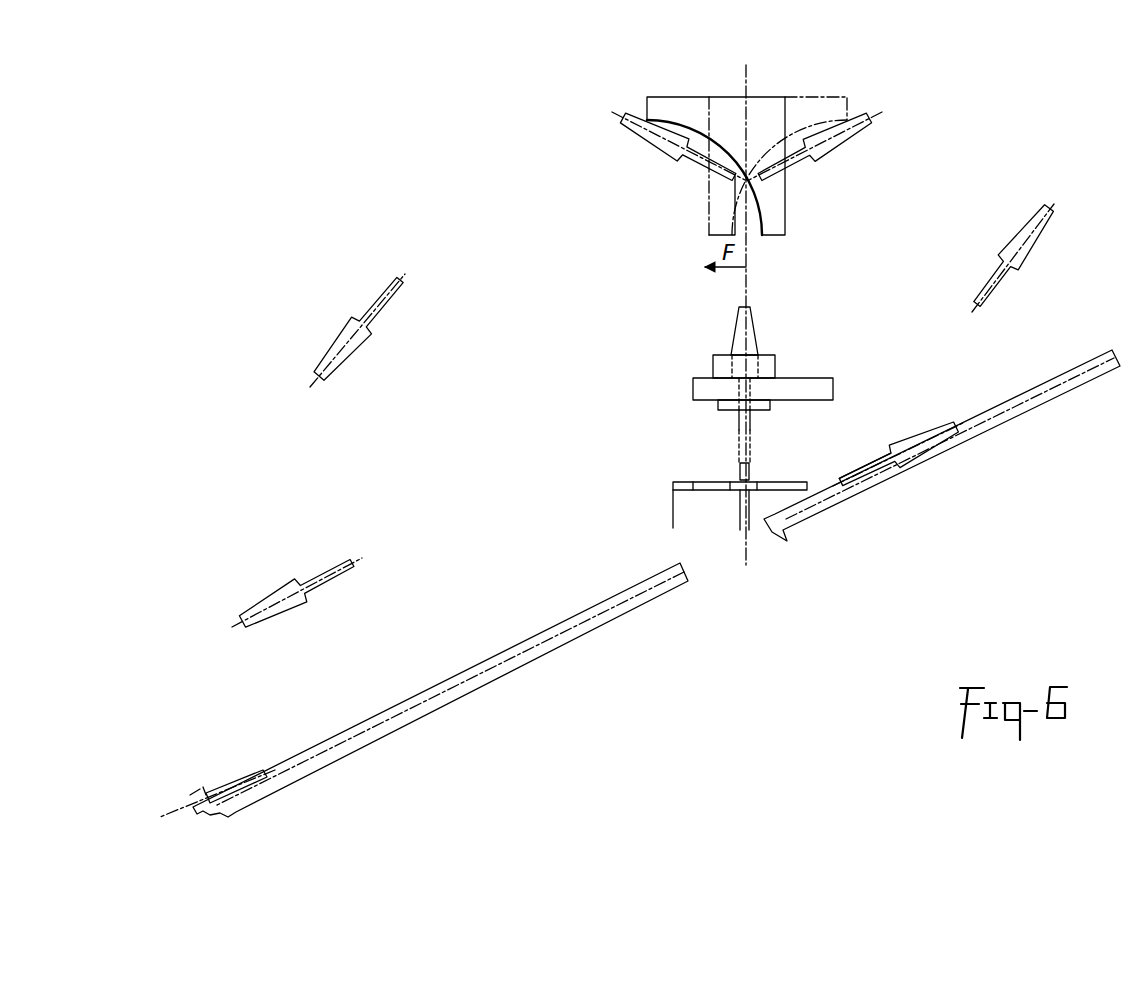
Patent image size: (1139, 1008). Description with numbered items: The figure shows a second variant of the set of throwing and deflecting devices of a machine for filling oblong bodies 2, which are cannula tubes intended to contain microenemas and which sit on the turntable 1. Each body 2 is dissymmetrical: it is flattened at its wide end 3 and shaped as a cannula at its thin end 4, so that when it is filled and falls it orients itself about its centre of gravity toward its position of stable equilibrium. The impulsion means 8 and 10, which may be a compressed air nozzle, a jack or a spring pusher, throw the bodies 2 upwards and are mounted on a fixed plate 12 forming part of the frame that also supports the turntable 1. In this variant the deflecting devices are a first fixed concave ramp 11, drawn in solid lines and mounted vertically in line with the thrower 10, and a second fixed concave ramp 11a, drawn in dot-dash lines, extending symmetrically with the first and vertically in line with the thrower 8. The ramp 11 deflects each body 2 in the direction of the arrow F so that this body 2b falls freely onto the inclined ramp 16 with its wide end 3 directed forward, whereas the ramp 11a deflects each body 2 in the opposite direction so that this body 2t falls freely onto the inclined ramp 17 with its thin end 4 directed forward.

The turntable 1 is at (812, 386).
The oblong body 2 is at (654, 151).
The body with wide end forward 2b is at (282, 537).
The body with thin end forward 2t is at (910, 428).
The wide end 3 is at (265, 595).
The thin end 4 is at (858, 470).
The impulsion means (thrower) 8 is at (752, 480).
The impulsion means (thrower) 10 is at (750, 480).
The first fixed concave ramp 11 is at (677, 94).
The second fixed concave ramp 11a is at (806, 94).
The fixed plate 12 is at (690, 482).
The inclined ramp 16 is at (530, 660).
The inclined ramp 17 is at (1052, 405).